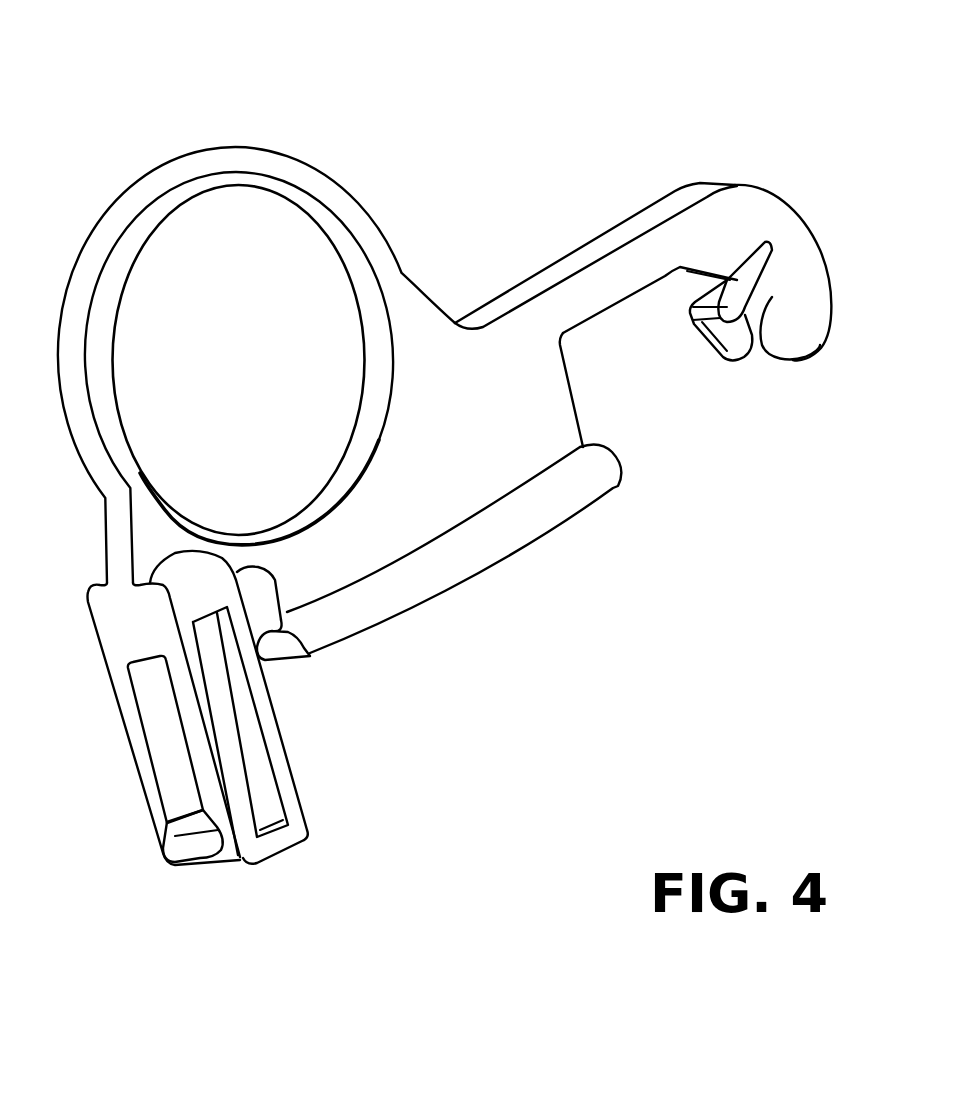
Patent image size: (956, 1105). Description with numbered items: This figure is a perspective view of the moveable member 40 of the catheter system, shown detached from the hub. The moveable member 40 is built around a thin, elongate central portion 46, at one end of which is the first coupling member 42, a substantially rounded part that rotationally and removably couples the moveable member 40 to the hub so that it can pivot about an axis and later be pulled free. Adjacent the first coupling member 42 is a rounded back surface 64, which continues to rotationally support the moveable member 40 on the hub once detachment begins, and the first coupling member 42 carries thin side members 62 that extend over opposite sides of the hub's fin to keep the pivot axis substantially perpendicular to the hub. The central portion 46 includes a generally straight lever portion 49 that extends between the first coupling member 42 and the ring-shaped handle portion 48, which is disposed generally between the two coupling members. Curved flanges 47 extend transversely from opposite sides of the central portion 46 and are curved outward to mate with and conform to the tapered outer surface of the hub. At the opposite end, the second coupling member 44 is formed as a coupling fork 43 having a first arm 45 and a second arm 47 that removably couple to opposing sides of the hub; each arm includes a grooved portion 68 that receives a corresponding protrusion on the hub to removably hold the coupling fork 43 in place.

The moveable member 40 is at (443, 138).
The first coupling member 42 is at (743, 237).
The coupling fork 43 is at (160, 703).
The second coupling member 44 is at (155, 747).
The first arm 45 is at (250, 753).
The central portion 46 is at (492, 460).
The second arm / curved flange 47 is at (445, 570).
The handle portion 48 is at (197, 186).
The lever portion 49 is at (613, 277).
The side members 62 is at (802, 323).
The rounded back surface 64 is at (717, 180).
The grooved portion 68 is at (207, 852).